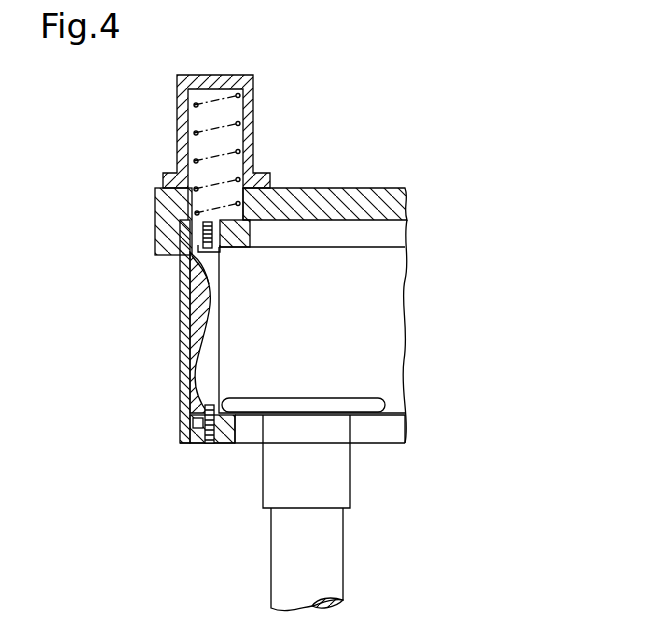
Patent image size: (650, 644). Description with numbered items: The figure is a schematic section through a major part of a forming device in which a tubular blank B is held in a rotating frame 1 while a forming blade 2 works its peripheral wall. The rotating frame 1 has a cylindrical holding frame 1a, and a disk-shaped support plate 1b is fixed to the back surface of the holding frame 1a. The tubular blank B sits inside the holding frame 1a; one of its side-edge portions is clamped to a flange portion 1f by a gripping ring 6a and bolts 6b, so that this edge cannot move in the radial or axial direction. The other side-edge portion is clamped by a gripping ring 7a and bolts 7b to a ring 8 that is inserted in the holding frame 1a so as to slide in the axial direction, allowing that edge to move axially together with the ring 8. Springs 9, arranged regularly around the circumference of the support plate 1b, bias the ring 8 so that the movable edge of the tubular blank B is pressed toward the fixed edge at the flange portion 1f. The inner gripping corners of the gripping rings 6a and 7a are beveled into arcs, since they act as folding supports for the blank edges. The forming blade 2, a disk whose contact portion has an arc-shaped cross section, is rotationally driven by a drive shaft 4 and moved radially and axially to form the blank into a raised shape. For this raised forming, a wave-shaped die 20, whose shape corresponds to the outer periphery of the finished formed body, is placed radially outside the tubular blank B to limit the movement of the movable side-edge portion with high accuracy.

The springs 9 is at (197, 119).
The support plate 1b is at (345, 198).
The bolts 7b is at (165, 236).
The gripping ring 7a is at (170, 258).
The rotating frame 1 is at (139, 331).
The holding frame 1a is at (178, 285).
The ring 8 is at (230, 232).
The tubular blank B is at (228, 350).
The wave-shaped die 20 is at (200, 352).
The gripping ring 6a is at (184, 427).
The bolts 6b is at (186, 444).
The flange portion 1f is at (199, 445).
The forming blade 2 is at (376, 408).
The drive shaft 4 is at (330, 566).